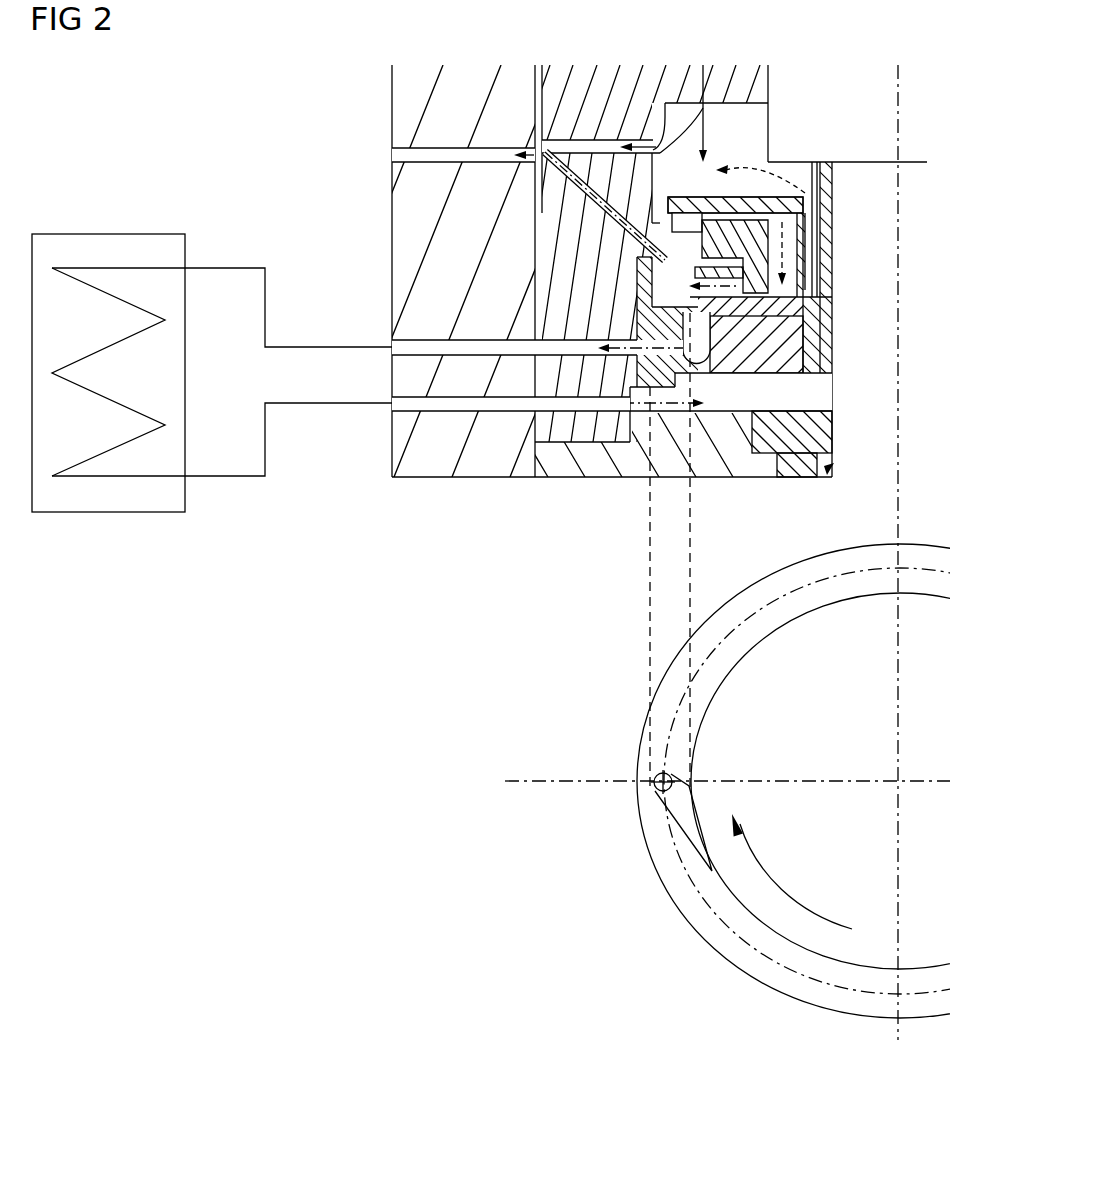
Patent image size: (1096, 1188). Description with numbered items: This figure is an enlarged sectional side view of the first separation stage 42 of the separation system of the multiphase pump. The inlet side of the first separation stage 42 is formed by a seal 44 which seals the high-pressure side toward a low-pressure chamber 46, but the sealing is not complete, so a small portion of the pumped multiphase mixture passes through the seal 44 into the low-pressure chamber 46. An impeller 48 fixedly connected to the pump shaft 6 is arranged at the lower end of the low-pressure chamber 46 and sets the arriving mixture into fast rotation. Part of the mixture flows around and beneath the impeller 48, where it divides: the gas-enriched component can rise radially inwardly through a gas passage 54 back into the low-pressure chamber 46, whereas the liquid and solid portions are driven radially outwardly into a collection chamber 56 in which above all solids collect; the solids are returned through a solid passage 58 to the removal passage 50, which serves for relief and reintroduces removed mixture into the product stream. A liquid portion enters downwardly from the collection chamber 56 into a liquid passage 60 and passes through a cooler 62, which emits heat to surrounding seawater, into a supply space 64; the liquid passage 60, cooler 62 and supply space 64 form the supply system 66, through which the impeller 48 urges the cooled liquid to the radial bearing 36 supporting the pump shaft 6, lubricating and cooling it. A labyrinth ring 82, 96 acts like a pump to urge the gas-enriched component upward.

The pump shaft 6 is at (884, 368).
The radial bearing 36 is at (820, 440).
The first separation stage 42 is at (380, 124).
The seal 44 is at (702, 84).
The low-pressure chamber 46 is at (741, 108).
The impeller 48 is at (828, 322).
The removal passage 50 is at (573, 140).
The gas passage 54 is at (818, 238).
The collection chamber 56 is at (660, 282).
The solid passage 58 is at (598, 209).
The liquid passage 60 is at (573, 352).
The cooler 62 is at (132, 512).
The supply space 64 is at (750, 403).
The supply system 66 is at (380, 427).
The labyrinth ring 82 is at (795, 213).
The labyrinth ring 96 is at (735, 205).